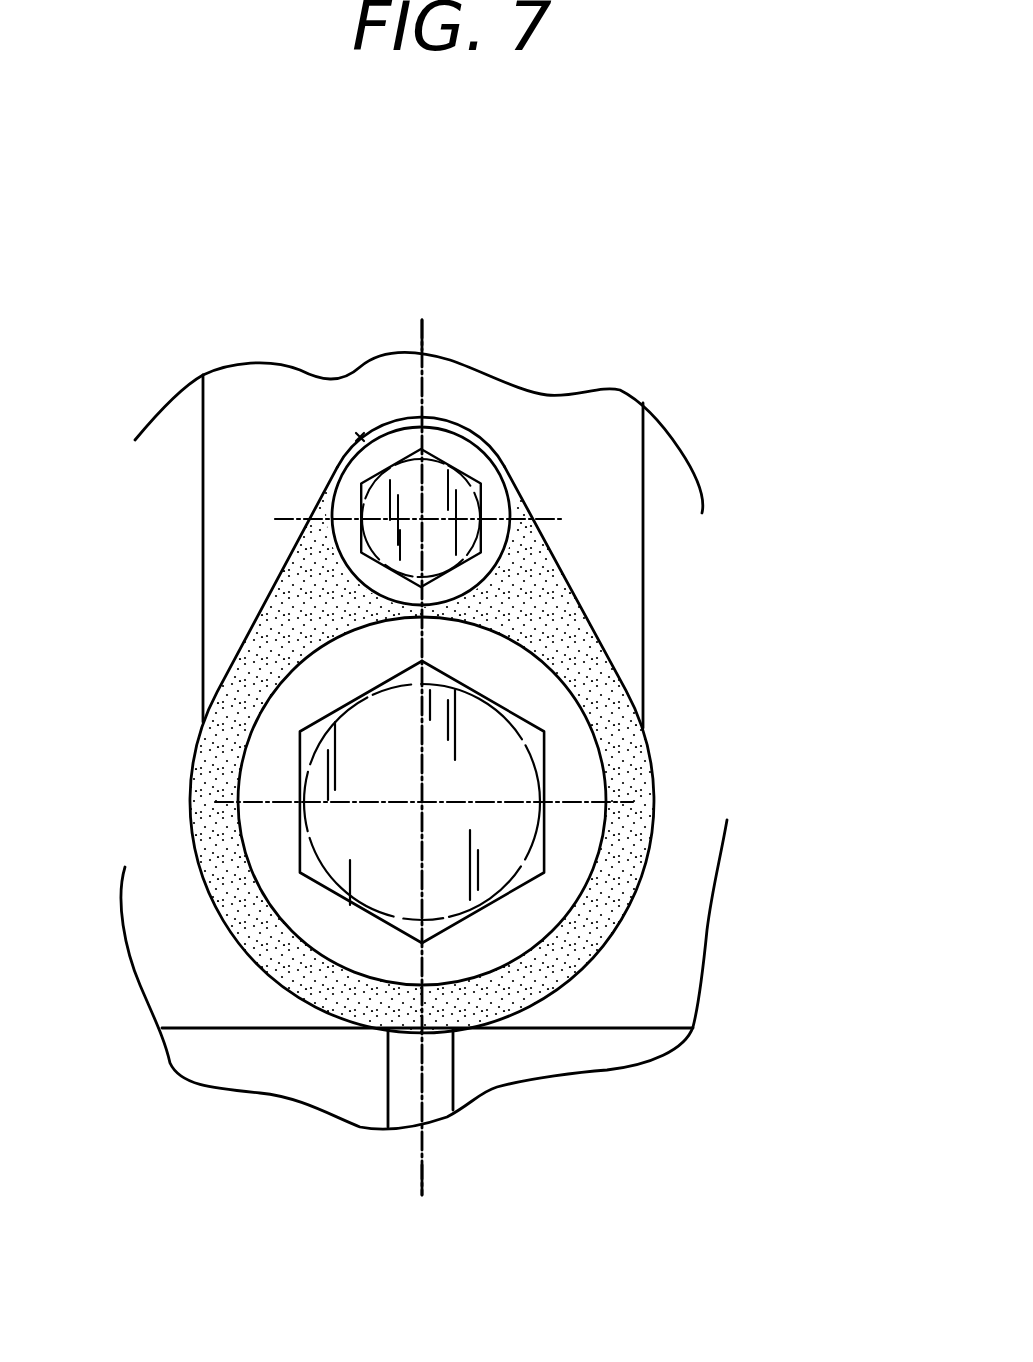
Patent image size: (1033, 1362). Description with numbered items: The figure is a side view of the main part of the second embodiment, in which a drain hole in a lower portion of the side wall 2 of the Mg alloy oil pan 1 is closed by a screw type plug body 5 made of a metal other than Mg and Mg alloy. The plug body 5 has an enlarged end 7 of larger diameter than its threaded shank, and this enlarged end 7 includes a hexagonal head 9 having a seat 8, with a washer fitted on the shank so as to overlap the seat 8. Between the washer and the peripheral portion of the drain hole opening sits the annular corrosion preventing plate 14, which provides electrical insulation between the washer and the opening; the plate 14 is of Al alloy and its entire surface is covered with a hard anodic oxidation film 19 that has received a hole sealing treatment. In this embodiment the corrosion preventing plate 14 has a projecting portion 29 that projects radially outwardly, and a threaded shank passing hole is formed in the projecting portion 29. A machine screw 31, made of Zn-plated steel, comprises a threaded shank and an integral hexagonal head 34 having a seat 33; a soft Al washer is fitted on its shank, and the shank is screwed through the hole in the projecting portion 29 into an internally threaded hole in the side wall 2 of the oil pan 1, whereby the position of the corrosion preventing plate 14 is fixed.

The oil pan 1 is at (660, 469).
The side wall 2 is at (223, 510).
The plug body 5 is at (549, 963).
The enlarged end 7 is at (582, 870).
The seat 8 is at (486, 1195).
The hexagonal head 9 is at (393, 897).
The corrosion preventing plate 14 is at (668, 774).
The hard anodic oxidation film 19 is at (205, 780).
The projecting portion 29 is at (548, 575).
The machine screw 31 is at (361, 436).
The seat 33 is at (498, 500).
The hexagonal head 34 is at (373, 507).